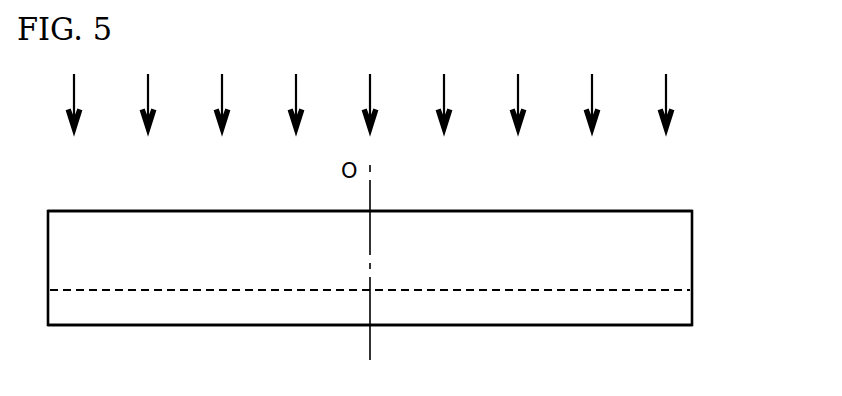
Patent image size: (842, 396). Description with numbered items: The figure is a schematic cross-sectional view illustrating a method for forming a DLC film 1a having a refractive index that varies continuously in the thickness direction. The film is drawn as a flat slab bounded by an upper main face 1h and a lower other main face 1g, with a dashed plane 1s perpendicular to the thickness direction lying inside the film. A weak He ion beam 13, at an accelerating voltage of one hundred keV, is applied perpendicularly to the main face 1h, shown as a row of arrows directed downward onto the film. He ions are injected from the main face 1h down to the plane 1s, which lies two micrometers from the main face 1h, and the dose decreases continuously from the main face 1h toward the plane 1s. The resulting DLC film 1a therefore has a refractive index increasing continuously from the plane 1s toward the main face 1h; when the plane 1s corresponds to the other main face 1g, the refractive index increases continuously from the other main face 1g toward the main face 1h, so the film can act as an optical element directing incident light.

The He ion beam 13 is at (667, 92).
The DLC film 1a is at (677, 242).
The main face 1h is at (643, 210).
The plane perpendicular to the thickness direction 1s is at (660, 290).
The other main face 1g is at (655, 325).